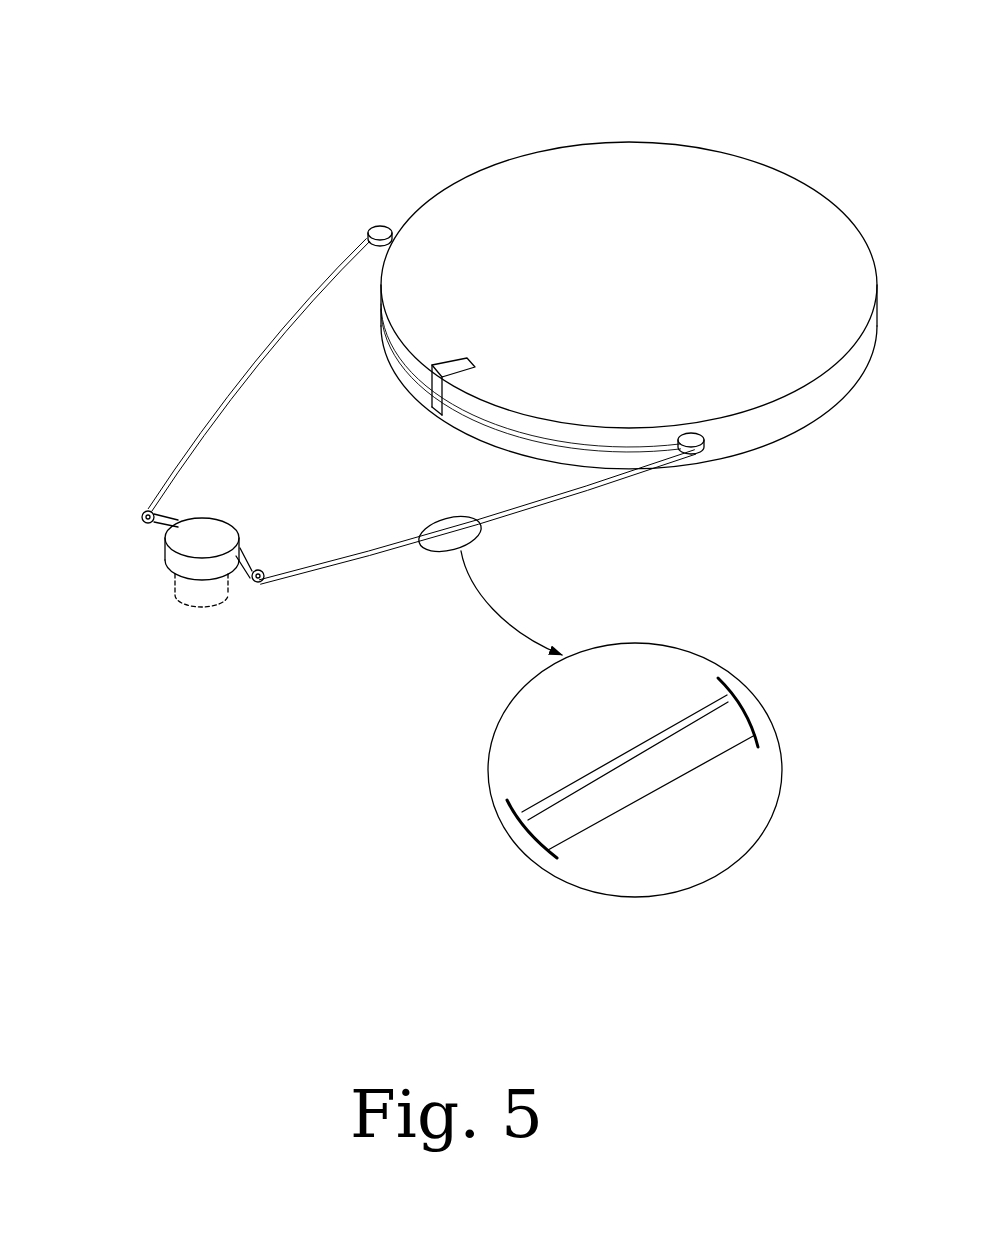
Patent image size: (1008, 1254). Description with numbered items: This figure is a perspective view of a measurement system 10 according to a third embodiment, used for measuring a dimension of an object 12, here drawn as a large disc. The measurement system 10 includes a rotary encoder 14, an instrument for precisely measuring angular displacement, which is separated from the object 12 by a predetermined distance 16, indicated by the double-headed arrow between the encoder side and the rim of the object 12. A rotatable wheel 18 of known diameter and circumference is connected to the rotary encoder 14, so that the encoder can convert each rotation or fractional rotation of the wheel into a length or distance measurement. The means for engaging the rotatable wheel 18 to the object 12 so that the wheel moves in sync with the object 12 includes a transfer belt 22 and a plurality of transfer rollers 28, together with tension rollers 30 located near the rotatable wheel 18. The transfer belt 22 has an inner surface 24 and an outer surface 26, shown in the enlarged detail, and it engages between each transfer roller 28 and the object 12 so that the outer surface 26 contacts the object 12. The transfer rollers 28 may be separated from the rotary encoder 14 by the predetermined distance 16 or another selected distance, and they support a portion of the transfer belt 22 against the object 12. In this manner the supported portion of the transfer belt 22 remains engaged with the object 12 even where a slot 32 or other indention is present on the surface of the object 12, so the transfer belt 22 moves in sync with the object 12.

The measurement system 10 is at (208, 202).
The object 12 is at (657, 291).
The rotary encoder 14 is at (202, 597).
The predetermined distance 16 is at (422, 410).
The rotatable wheel 18 is at (168, 562).
The transfer belt 22 is at (272, 337).
The inner surface 24 is at (254, 367).
The outer surface 26 is at (570, 502).
The transfer rollers 28 is at (380, 227).
The tension rollers 30 is at (147, 510).
The slot 32 is at (447, 352).